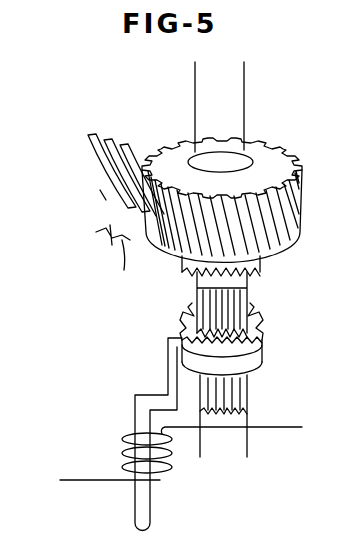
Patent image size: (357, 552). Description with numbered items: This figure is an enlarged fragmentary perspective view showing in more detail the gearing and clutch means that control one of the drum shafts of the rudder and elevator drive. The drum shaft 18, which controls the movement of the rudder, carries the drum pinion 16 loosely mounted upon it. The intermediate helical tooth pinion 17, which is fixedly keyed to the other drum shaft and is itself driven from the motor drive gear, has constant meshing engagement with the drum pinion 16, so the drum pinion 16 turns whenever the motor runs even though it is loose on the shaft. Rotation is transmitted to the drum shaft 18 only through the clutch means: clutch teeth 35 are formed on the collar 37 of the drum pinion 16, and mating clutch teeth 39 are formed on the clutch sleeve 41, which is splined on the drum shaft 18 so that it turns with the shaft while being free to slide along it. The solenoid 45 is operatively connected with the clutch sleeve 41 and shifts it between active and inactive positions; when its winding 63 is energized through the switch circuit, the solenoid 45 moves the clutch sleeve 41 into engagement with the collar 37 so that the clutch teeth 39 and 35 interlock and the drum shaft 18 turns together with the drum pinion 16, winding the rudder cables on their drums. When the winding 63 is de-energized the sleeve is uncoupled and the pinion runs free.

The drum pinion 16 is at (275, 163).
The intermediate helical tooth pinion 17 is at (126, 214).
The drum shaft 18 is at (230, 108).
The clutch teeth 35 is at (182, 272).
The collar 37 is at (260, 262).
The clutch teeth 39 is at (247, 308).
The clutch sleeve 41 is at (254, 362).
The solenoid 45 is at (122, 455).
The winding 63 is at (172, 470).